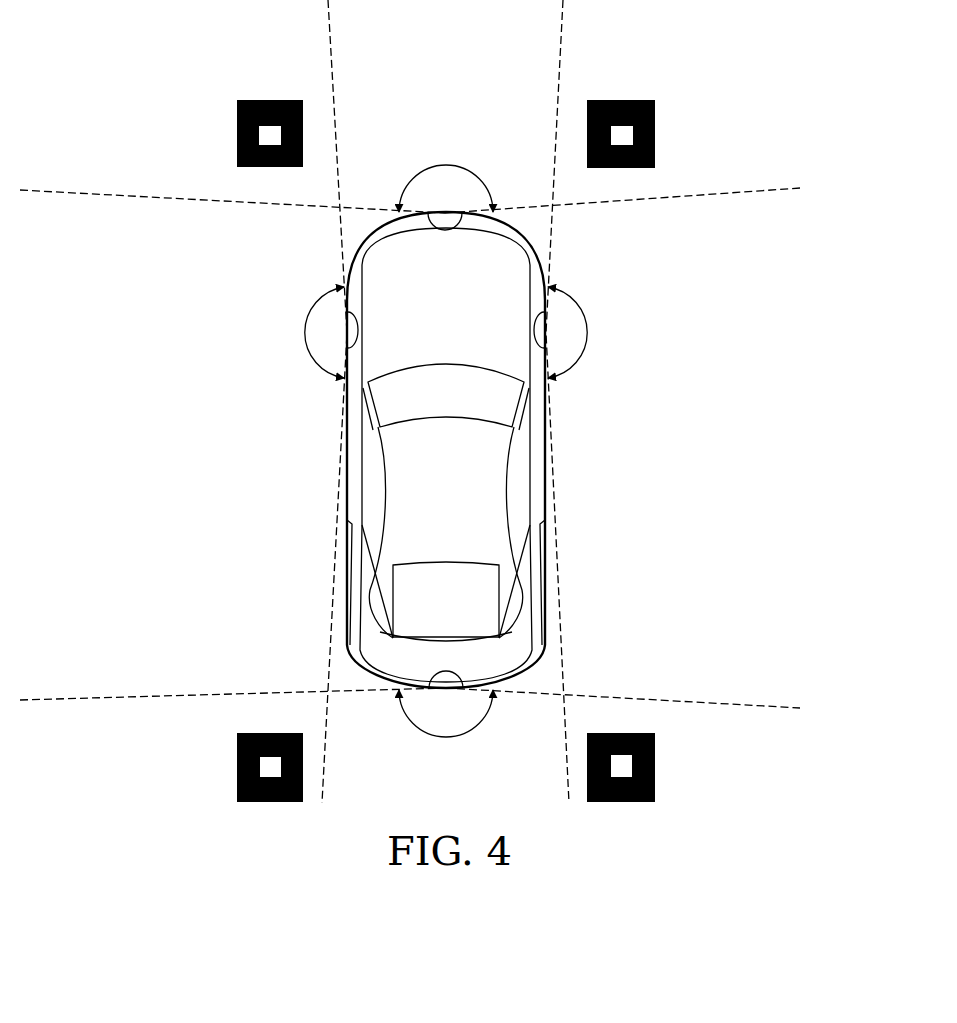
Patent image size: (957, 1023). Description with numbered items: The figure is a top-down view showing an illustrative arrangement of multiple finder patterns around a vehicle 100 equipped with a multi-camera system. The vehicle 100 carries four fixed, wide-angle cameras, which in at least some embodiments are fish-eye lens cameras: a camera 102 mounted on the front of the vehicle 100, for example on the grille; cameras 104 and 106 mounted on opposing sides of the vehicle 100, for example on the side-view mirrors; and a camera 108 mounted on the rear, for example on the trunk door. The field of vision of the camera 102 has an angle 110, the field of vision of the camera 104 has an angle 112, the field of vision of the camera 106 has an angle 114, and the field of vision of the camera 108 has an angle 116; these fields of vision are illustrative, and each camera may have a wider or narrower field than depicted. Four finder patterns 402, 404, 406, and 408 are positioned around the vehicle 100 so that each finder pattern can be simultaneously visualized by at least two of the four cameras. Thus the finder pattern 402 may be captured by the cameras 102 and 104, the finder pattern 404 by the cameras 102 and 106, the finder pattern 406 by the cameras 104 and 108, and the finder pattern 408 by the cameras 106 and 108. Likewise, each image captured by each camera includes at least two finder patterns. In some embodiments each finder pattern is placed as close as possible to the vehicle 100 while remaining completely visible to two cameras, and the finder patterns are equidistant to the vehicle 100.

The vehicle 100 is at (421, 522).
The camera 102 is at (446, 222).
The camera 104 is at (356, 328).
The camera 106 is at (537, 332).
The camera 108 is at (445, 675).
The angle 110 is at (446, 164).
The angle 112 is at (301, 333).
The angle 114 is at (592, 333).
The angle 116 is at (446, 737).
The finder pattern 402 is at (269, 98).
The finder pattern 404 is at (623, 98).
The finder pattern 406 is at (269, 804).
The finder pattern 408 is at (623, 804).